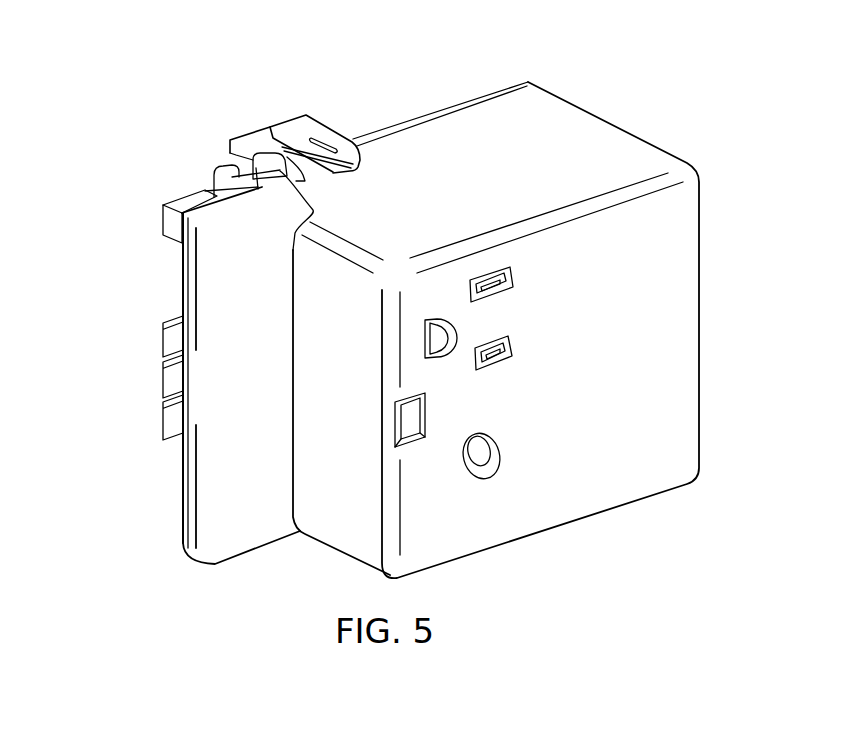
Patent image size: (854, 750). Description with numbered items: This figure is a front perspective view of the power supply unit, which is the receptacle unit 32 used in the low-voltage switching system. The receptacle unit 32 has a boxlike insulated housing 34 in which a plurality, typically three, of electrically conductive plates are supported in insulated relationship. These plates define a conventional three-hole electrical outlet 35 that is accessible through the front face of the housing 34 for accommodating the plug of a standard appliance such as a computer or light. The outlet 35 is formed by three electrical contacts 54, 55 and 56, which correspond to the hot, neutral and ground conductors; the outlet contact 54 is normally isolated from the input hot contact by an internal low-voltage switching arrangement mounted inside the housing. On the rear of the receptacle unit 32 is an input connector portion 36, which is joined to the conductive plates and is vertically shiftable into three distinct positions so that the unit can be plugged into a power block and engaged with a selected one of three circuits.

The receptacle unit 32 is at (623, 128).
The boxlike insulated housing 34 is at (537, 95).
The three-hole electrical outlet 35 is at (508, 314).
The input connector portion 36 is at (156, 323).
The outlet contact 54 is at (483, 275).
The outlet contact 55 is at (495, 355).
The outlet contact 56 is at (433, 338).